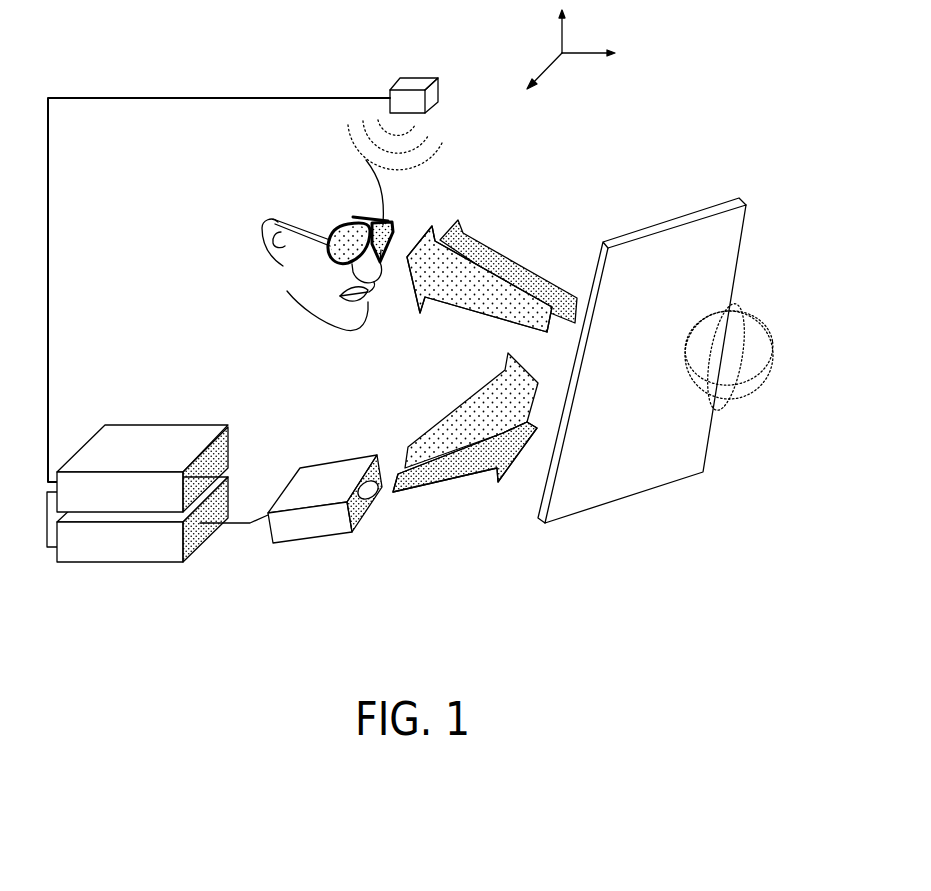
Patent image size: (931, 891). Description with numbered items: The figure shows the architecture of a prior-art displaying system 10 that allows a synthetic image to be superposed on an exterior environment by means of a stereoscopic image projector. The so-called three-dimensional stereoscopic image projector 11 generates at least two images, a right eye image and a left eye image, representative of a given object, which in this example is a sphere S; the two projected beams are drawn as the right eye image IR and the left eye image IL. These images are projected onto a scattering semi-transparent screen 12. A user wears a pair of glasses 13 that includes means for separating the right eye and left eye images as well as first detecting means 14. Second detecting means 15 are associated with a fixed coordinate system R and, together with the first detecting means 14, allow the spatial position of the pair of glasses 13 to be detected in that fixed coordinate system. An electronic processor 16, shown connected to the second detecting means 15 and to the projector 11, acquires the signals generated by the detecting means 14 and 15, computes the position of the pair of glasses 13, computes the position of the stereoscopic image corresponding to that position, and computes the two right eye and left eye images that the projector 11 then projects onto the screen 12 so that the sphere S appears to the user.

The displaying system 10 is at (693, 150).
The stereoscopic image projector 11 is at (310, 532).
The scattering semi-transparent screen 12 is at (607, 488).
The pair of glasses 13 is at (289, 218).
The first detecting means 14 is at (364, 215).
The second detecting means 15 is at (415, 82).
The electronic processor 16 is at (92, 553).
The sphere S is at (750, 387).
The right-eye image light IR is at (458, 418).
The left-eye image light IL is at (460, 478).
The fixed coordinate system R is at (571, 49).